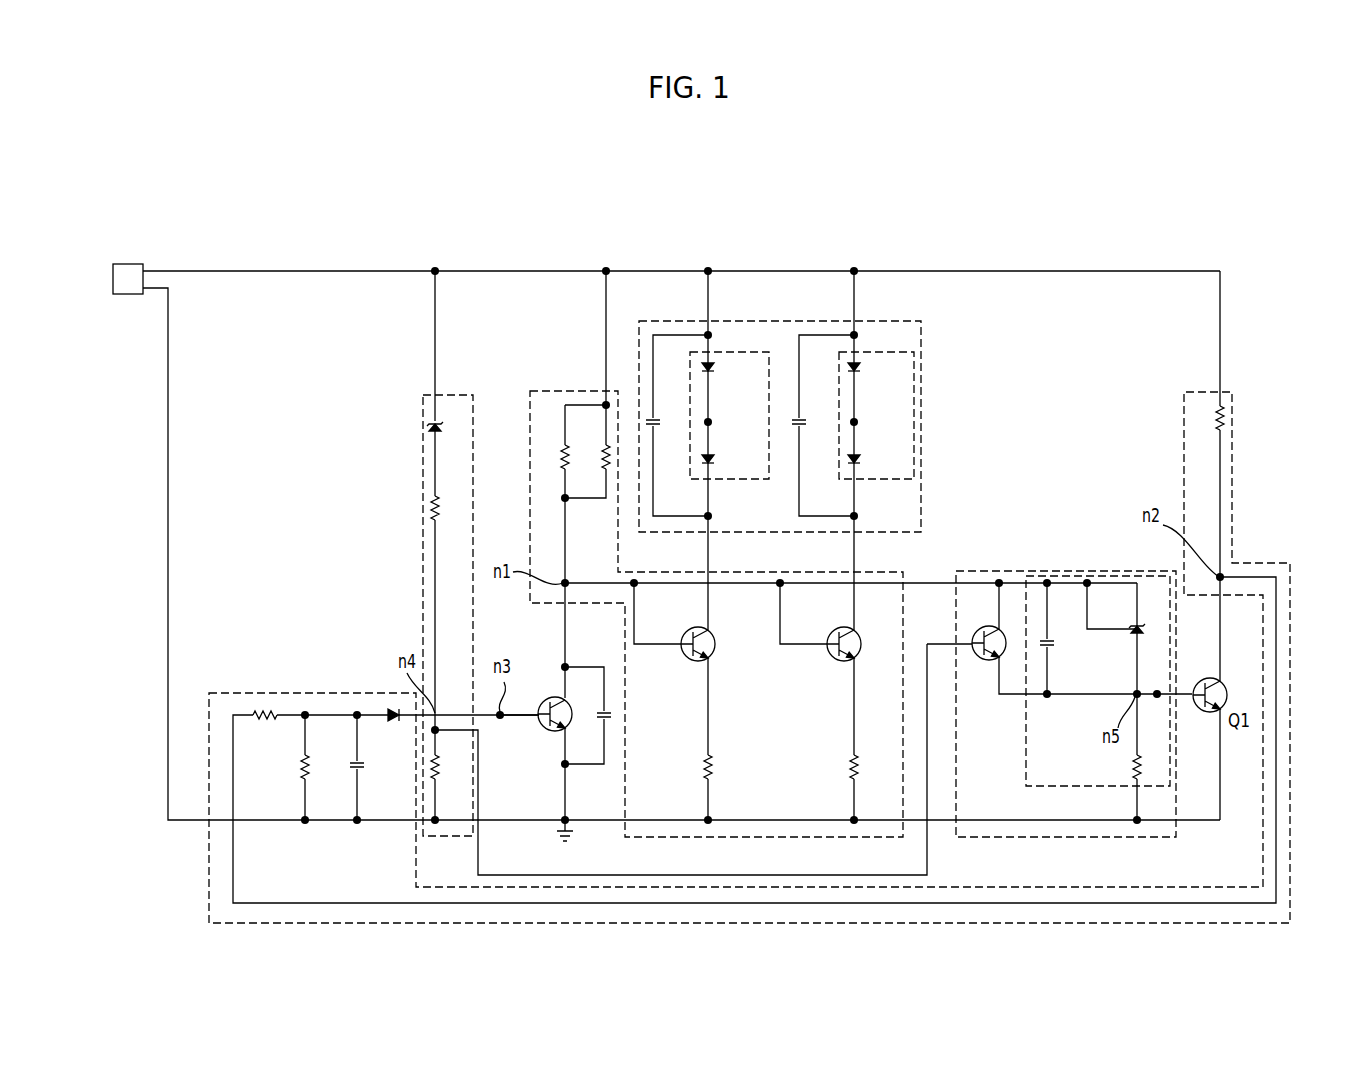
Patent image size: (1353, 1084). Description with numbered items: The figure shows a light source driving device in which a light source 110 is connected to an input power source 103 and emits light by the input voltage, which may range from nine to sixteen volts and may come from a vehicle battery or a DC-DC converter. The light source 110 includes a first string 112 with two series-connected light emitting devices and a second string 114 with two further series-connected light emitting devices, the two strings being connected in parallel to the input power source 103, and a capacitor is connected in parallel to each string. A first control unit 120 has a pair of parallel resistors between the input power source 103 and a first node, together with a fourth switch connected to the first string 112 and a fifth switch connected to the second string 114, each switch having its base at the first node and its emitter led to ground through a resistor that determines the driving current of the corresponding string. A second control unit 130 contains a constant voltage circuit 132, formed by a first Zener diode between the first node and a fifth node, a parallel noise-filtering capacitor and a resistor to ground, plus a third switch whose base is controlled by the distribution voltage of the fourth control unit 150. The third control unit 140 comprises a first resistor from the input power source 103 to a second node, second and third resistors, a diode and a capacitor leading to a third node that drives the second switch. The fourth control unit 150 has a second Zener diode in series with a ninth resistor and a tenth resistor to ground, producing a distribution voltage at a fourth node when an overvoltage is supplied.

The input power source 103 is at (126, 295).
The light source 110 is at (819, 399).
The first string 112 is at (745, 352).
The second string 114 is at (893, 352).
The first control unit 120 is at (552, 391).
The second control unit 130 is at (813, 680).
The constant voltage circuit 132 is at (1086, 576).
The third control unit 140 is at (318, 693).
The fourth control unit 150 is at (423, 458).